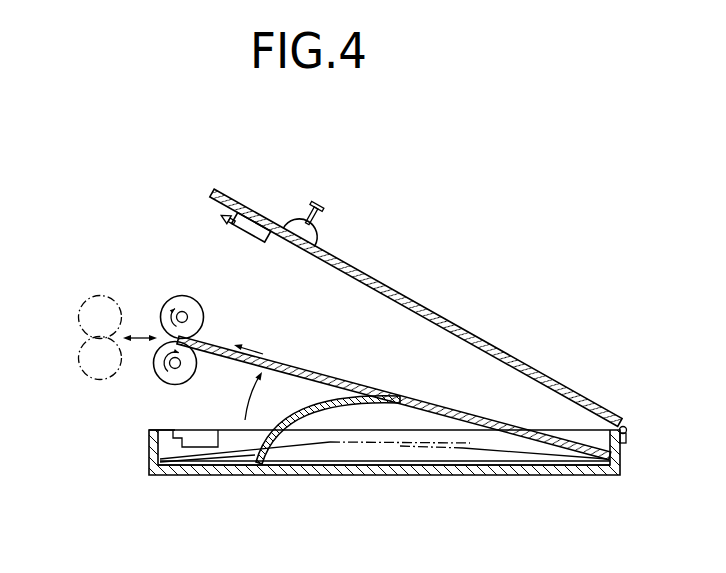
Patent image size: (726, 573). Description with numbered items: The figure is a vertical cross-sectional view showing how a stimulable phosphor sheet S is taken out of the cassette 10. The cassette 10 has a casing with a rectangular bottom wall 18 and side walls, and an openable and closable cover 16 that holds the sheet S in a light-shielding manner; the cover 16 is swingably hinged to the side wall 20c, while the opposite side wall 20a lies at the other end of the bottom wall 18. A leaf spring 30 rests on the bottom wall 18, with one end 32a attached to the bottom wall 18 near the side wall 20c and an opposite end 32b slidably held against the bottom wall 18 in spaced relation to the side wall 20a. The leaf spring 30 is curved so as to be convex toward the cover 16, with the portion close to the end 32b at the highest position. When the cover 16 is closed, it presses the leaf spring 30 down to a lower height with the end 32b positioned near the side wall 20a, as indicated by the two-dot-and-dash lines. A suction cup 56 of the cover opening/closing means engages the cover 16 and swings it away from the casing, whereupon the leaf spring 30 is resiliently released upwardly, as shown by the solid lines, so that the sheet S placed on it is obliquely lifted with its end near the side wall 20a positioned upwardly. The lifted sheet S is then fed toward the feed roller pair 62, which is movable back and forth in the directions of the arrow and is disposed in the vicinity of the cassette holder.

The cassette 10 is at (478, 300).
The cover 16 is at (384, 279).
The bottom wall 18 is at (527, 474).
The side wall 20a is at (150, 462).
The side wall 20c is at (623, 453).
The leaf spring 30 is at (330, 416).
The end of leaf spring 32a is at (607, 453).
The end of leaf spring 32b is at (258, 467).
The suction cup 56 is at (305, 222).
The feed roller pair 62 is at (170, 308).
The stimulable phosphor sheet S is at (295, 365).